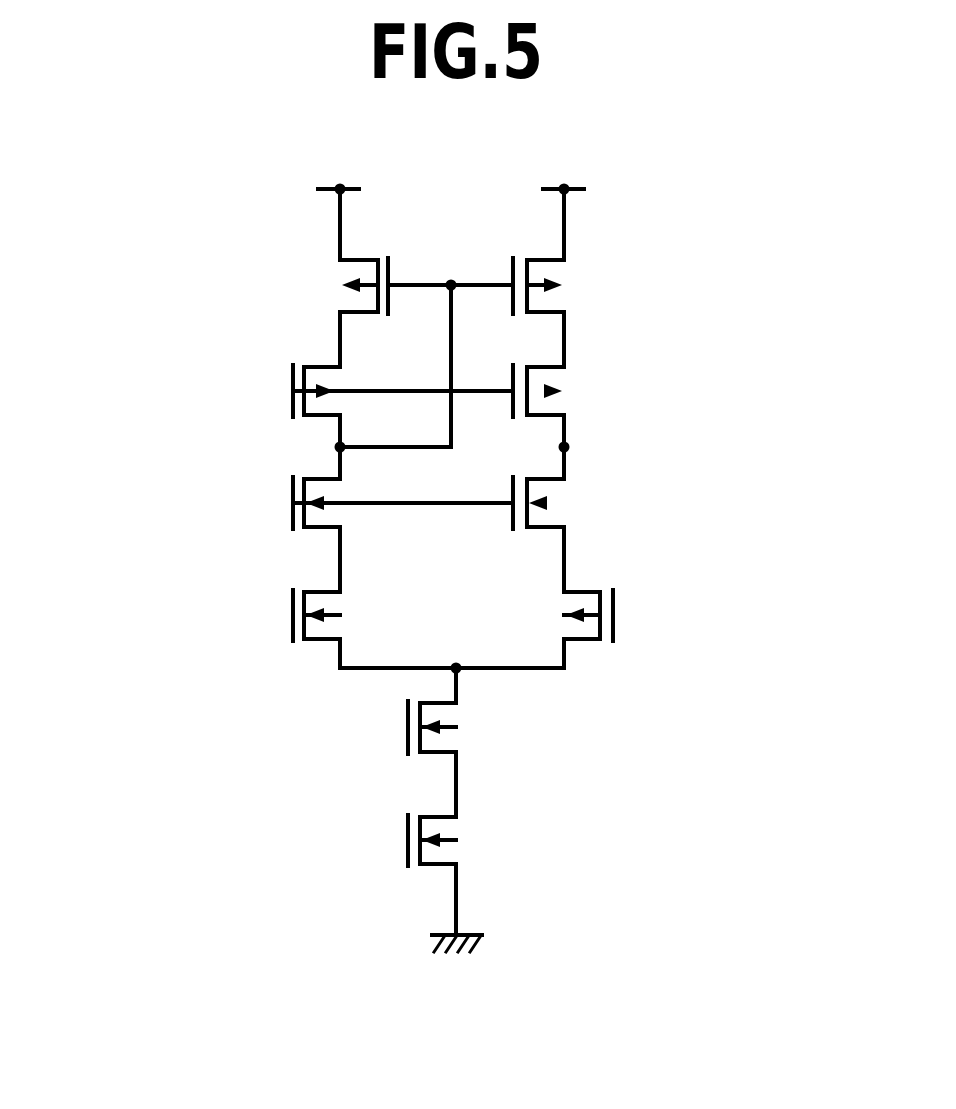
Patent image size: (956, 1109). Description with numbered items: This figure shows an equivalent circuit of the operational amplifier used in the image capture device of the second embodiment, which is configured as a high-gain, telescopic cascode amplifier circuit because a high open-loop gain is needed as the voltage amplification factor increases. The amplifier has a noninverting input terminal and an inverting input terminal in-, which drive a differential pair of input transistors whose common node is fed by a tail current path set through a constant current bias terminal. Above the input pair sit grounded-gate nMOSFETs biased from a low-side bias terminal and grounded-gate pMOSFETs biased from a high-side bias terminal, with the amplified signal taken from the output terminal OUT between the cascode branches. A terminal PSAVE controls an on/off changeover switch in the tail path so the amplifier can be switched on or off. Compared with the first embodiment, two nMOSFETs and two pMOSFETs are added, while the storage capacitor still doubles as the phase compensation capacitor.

The inverting input terminal in- is at (613, 615).
The output terminal OUT is at (564, 447).
The terminal for an on/off changeover switch PSAVE is at (408, 727).